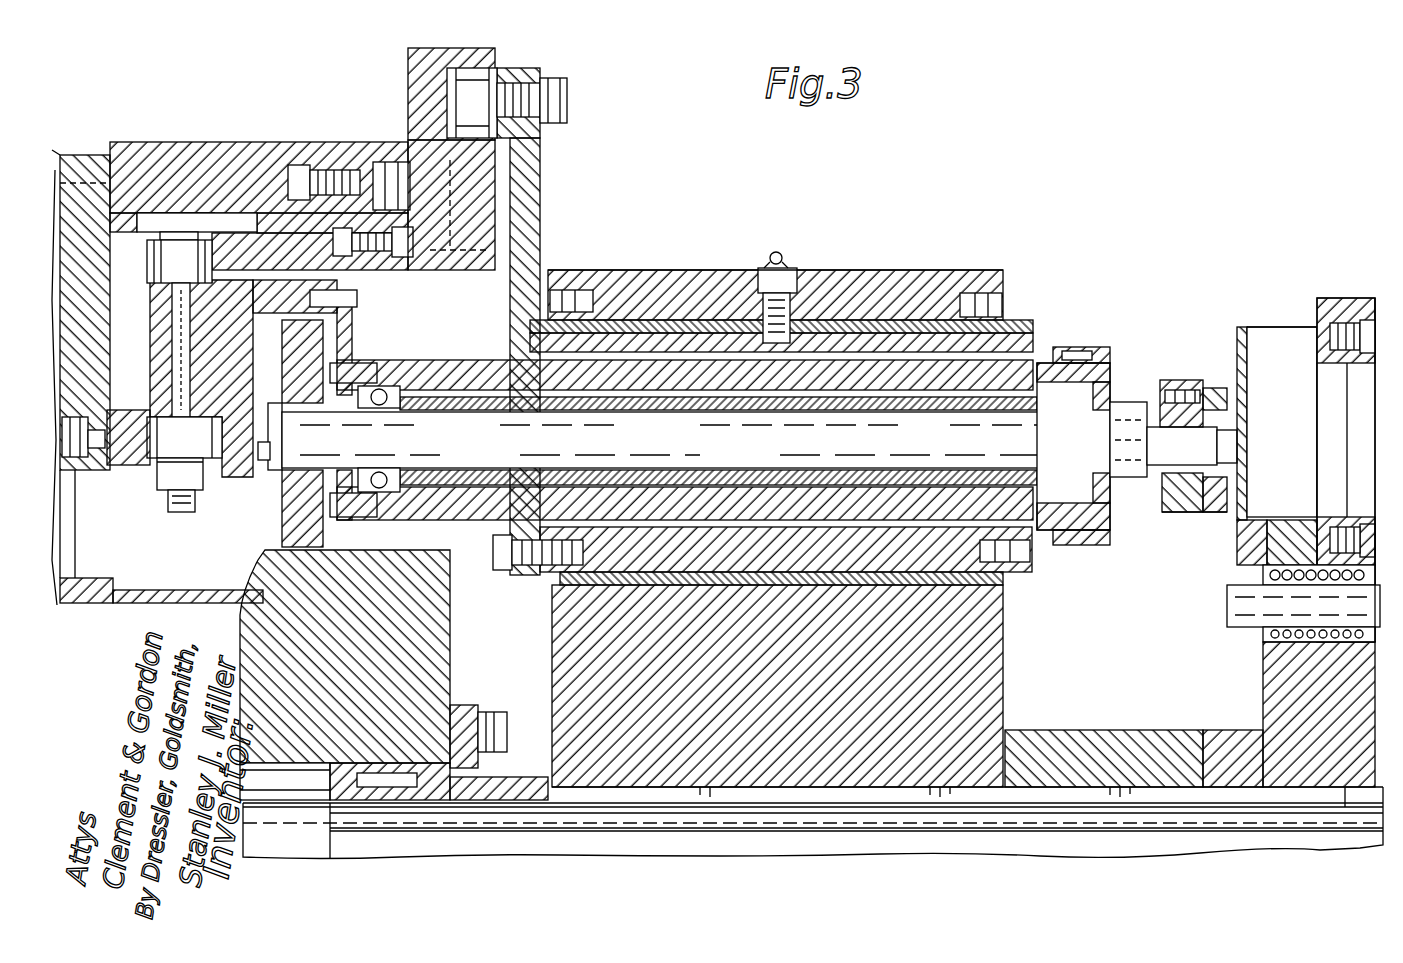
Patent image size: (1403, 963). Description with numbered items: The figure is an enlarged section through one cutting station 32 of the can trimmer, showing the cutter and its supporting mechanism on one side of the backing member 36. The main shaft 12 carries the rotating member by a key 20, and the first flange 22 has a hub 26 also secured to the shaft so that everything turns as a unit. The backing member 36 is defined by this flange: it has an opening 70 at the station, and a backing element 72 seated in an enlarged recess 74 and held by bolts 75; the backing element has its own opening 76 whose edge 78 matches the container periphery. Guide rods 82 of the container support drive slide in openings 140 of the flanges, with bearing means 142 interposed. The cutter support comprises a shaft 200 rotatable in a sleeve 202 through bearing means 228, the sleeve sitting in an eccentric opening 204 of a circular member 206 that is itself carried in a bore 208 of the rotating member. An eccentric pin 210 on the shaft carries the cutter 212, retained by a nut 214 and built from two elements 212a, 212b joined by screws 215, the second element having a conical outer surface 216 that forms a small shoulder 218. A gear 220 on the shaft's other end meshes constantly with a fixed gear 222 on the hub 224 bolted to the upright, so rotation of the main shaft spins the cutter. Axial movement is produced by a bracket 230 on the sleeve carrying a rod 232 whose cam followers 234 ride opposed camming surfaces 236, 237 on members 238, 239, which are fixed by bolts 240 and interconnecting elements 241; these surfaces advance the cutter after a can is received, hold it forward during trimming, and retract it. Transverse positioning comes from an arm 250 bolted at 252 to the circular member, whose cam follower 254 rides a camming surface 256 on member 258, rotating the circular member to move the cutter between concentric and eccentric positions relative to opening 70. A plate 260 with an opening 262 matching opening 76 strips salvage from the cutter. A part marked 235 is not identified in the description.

The shaft 12 is at (590, 834).
The key 20 is at (748, 803).
The first flange 22 is at (1275, 680).
The hub 26 is at (1075, 736).
The cutting station 32 is at (1002, 191).
The backing member 36 is at (1350, 222).
The opening 70 is at (1350, 382).
The backing element 72 is at (1322, 336).
The enlarged recess 74 is at (1322, 332).
The bolts 75 is at (1365, 320).
The opening 76 is at (1335, 514).
The edge 78 is at (1320, 437).
The guide rods 82 is at (1238, 616).
The openings 140 is at (1340, 580).
The bearing means 142 is at (1265, 634).
The shaft 200 is at (722, 456).
The sleeve 202 is at (566, 395).
The eccentric opening 204 is at (785, 570).
The circular member 206 is at (1000, 566).
The bore 208 is at (920, 330).
The eccentric pin 210 is at (1173, 439).
The cutter 212 is at (1170, 513).
The cutter element 212a is at (1165, 380).
The cutter element 212b is at (1205, 378).
The nut 214 is at (1243, 406).
The screws 215 is at (1222, 386).
The conical outer surface 216 is at (1237, 556).
The shoulder 218 is at (1207, 514).
The gear 220 is at (282, 532).
The fixed gear 222 is at (420, 548).
The hub 224 is at (262, 595).
The bearing means 228 is at (1043, 406).
The bracket 230 is at (243, 478).
The rod 232 is at (178, 360).
The cam followers 234 is at (178, 465).
The upper nut 235 is at (157, 265).
The camming surface 236 is at (160, 456).
The camming surface 237 is at (220, 226).
The member 238 is at (118, 460).
The member 239 is at (268, 224).
The bolts 240 is at (305, 180).
The interconnecting elements 241 is at (175, 157).
The arm 250 is at (541, 168).
The bolts 252 is at (504, 566).
The cam follower 254 is at (497, 78).
The camming surface 256 is at (530, 136).
The member 258 is at (490, 224).
The plate 260 is at (1248, 340).
The opening 262 is at (1248, 378).